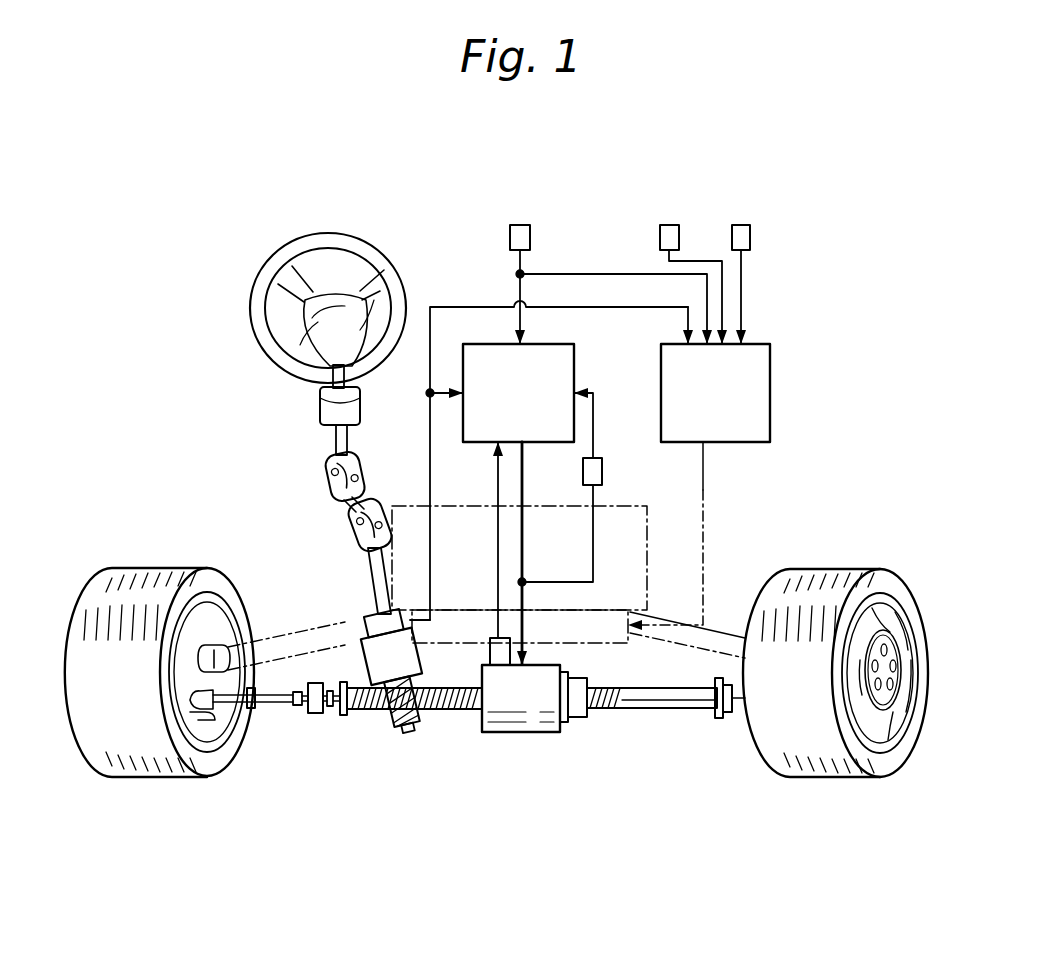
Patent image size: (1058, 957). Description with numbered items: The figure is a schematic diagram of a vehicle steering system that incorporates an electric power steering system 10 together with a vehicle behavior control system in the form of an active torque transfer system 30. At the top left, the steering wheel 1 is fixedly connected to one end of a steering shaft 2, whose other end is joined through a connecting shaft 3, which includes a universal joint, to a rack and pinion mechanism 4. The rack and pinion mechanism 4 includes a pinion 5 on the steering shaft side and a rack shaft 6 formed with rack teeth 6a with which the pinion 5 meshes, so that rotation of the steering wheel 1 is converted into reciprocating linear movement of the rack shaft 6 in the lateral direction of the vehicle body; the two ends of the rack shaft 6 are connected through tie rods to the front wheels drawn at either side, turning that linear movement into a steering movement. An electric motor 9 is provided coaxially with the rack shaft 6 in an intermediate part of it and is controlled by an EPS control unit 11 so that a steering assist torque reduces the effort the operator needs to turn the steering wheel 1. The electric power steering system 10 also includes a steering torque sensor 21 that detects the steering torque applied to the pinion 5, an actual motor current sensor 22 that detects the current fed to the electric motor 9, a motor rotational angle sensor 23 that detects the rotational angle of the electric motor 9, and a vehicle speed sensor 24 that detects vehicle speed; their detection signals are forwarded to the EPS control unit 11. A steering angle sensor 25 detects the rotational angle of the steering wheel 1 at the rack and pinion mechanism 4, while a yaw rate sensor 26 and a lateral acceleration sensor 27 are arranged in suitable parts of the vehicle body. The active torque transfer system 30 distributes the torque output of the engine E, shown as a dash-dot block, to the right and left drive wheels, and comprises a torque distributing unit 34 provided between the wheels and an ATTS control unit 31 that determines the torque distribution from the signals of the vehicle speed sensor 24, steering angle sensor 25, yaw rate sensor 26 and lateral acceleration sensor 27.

The steering wheel 1 is at (378, 263).
The steering shaft 2 is at (333, 441).
The connecting shaft 3 is at (352, 520).
The rack and pinion mechanism 4 is at (400, 760).
The pinion 5 is at (395, 722).
The rack shaft 6 is at (642, 712).
The rack teeth 6a is at (442, 712).
The electric motor 9 is at (521, 735).
The electric power steering system 10 is at (581, 793).
The EPS control unit 11 is at (550, 343).
The steering torque sensor 21 is at (328, 714).
The actual motor current sensor 22 is at (603, 465).
The motor rotational angle sensor 23 is at (490, 651).
The vehicle speed sensor 24 is at (529, 225).
The steering angle sensor 25 is at (360, 634).
The yaw rate sensor 26 is at (678, 226).
The lateral acceleration sensor 27 is at (746, 225).
The active torque transfer system (ATTS) 30 is at (817, 425).
The ATTS control unit 31 is at (771, 387).
The torque distributing unit 34 is at (598, 644).
The engine E is at (605, 506).